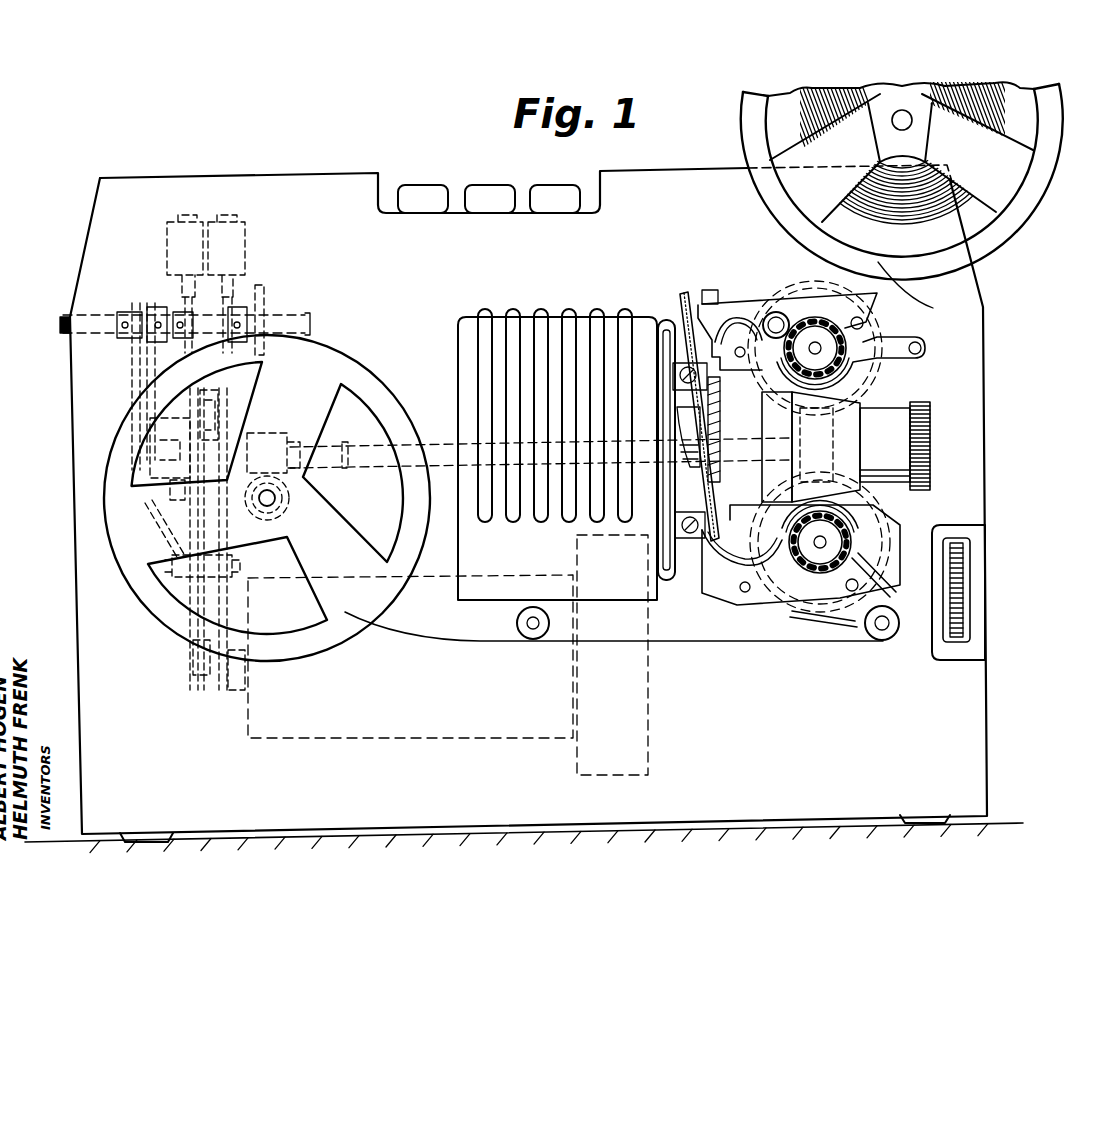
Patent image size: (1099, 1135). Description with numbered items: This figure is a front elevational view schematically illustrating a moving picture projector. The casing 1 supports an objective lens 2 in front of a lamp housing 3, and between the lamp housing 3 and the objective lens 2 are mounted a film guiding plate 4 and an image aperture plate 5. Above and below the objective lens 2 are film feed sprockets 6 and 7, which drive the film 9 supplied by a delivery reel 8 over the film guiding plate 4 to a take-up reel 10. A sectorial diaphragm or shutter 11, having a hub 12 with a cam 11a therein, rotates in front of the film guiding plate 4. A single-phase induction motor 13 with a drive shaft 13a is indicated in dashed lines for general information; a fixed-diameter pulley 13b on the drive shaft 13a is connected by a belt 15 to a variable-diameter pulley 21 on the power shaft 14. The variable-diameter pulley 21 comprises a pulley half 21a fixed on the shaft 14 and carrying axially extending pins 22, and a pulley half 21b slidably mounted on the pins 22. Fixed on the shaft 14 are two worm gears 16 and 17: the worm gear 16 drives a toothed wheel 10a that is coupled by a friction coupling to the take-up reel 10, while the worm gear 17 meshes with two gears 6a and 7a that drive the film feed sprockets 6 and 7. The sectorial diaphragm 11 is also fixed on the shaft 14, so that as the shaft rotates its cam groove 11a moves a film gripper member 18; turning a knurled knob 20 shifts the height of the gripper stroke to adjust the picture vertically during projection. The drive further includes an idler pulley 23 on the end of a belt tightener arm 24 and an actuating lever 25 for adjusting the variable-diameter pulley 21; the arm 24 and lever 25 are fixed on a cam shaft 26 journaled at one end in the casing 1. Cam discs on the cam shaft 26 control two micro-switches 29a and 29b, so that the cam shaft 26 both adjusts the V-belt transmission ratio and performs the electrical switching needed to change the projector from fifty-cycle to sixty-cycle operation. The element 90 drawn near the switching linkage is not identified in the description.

The casing 1 is at (953, 375).
The objective lens 2 is at (930, 440).
The lamp housing 3 is at (552, 325).
The film guiding plate 4 is at (683, 310).
The image aperture plate 5 is at (716, 378).
The film feed sprocket 6 is at (815, 340).
The gear 6a is at (875, 377).
The film feed sprocket 7 is at (807, 552).
The gear 7a is at (875, 498).
The delivery reel 8 is at (1002, 237).
The film 9 is at (933, 308).
The take-up reel 10 is at (325, 642).
The toothed wheel 10a is at (268, 500).
The sectorial diaphragm 11 is at (673, 585).
The cam groove 11a is at (717, 403).
The hub 12 is at (716, 423).
The single-phase induction motor 13 is at (418, 740).
The drive shaft 13a is at (233, 688).
The fixed-diameter pulley 13b is at (193, 667).
The shaft 14 is at (430, 443).
The belt 15 is at (198, 578).
The worm gear 16 is at (270, 432).
The worm gear 17 is at (825, 442).
The film gripper member 18 is at (716, 475).
The knurled knob 20 is at (960, 583).
The variable-diameter pulley 21 is at (170, 535).
The pulley half 21a is at (218, 405).
The pulley half 21b is at (193, 388).
The pins 22 is at (170, 468).
The idler pulley 23 is at (234, 580).
The belt tightener arm 24 is at (140, 388).
The actuating lever 25 is at (150, 365).
The cam shaft 26 is at (104, 335).
The micro-switch 29a is at (245, 250).
The micro-switch 29b is at (167, 250).
The lever 90 is at (265, 290).